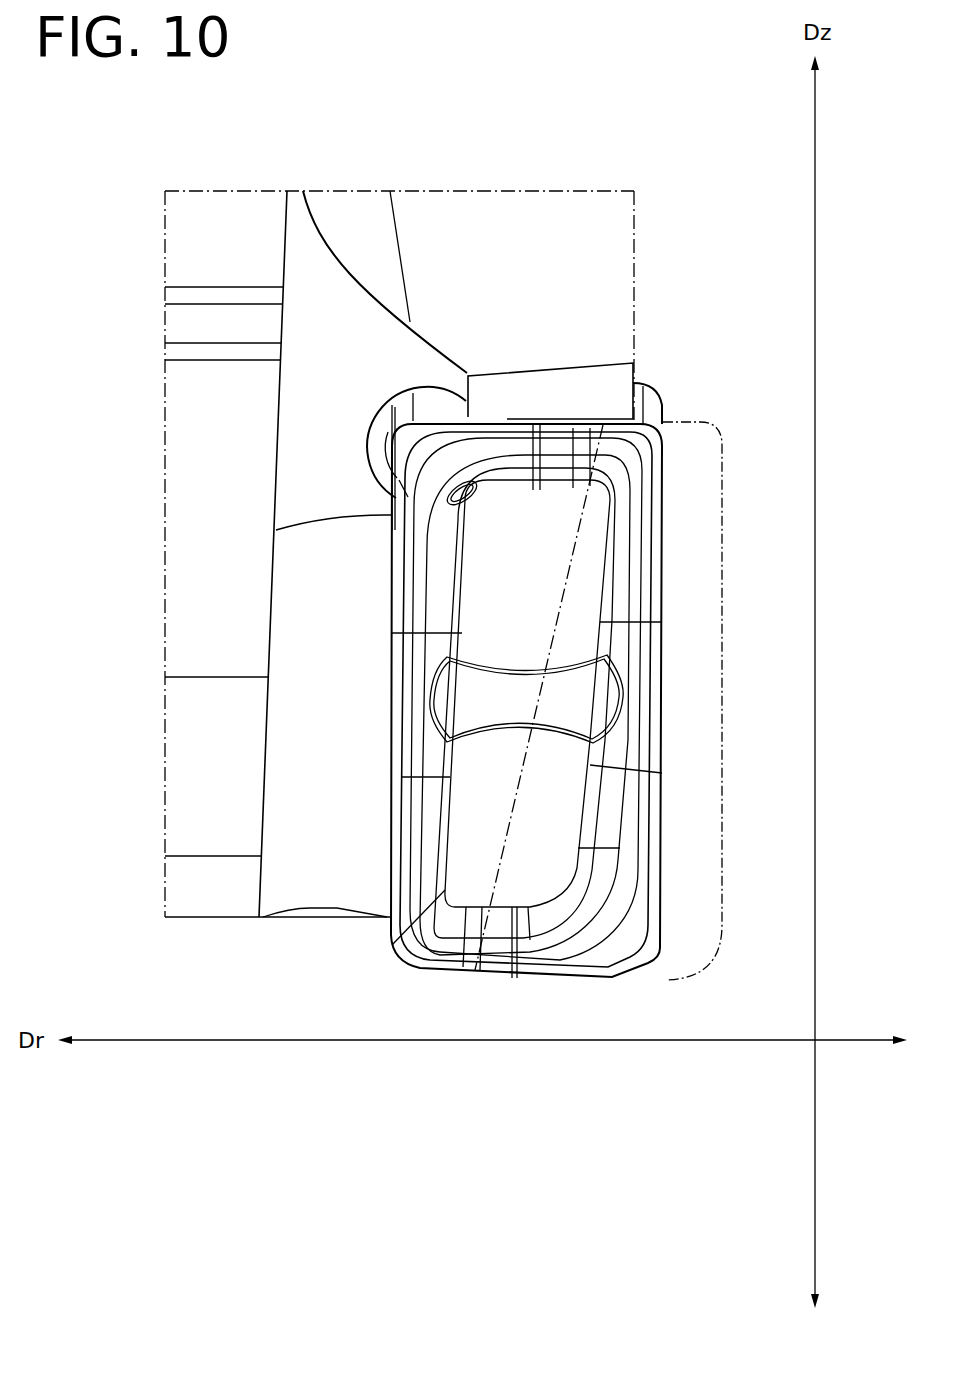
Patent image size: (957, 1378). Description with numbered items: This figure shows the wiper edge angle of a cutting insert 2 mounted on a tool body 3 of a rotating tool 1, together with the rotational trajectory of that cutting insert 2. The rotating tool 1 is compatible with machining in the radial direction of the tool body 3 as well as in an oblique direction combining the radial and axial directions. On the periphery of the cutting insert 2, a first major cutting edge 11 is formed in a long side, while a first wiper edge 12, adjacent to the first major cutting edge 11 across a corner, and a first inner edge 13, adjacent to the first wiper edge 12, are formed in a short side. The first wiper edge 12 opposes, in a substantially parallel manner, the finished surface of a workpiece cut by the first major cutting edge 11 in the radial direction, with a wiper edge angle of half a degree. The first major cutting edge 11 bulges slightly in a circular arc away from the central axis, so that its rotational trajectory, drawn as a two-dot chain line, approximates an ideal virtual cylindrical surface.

The rotating tool 1 is at (387, 1247).
The cutting insert 2 is at (694, 414).
The tool body 3 is at (205, 885).
The first major cutting edge 11 is at (665, 703).
The first wiper edge 12 is at (667, 982).
The first inner edge 13 is at (520, 985).